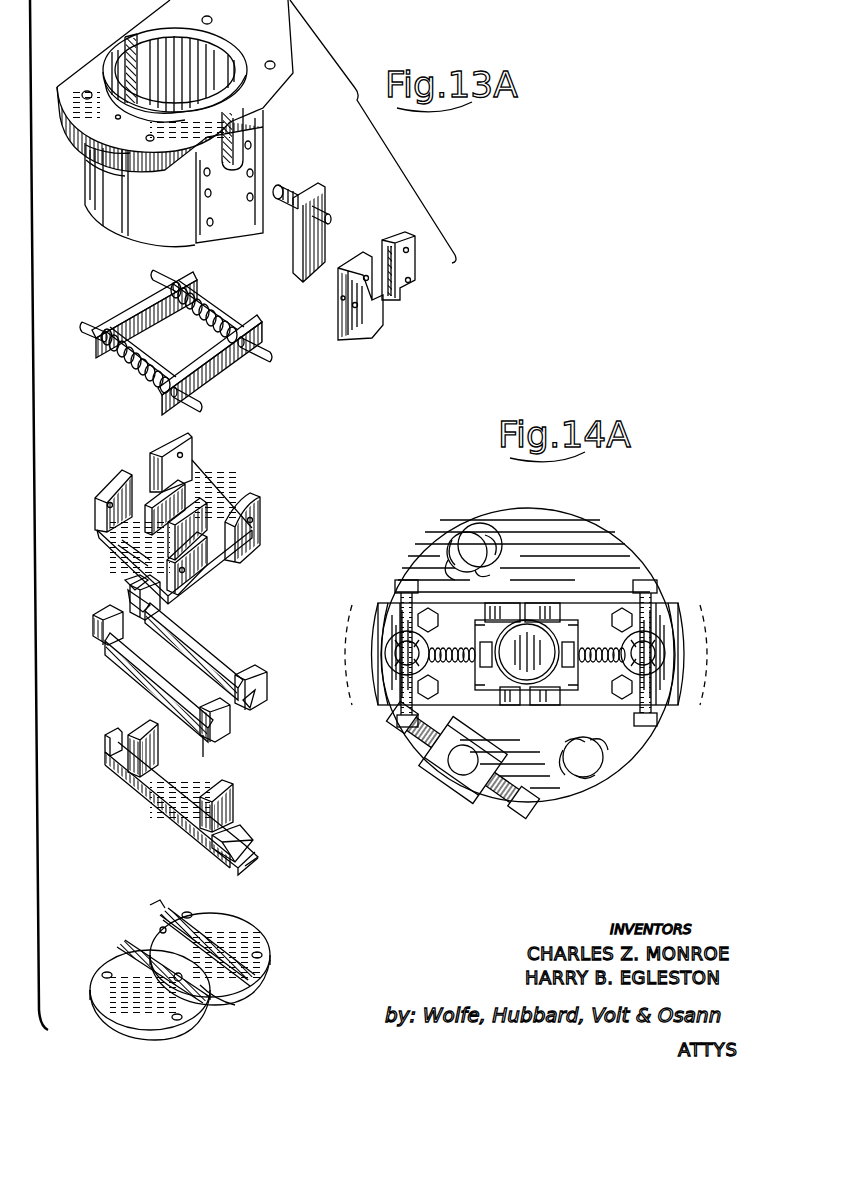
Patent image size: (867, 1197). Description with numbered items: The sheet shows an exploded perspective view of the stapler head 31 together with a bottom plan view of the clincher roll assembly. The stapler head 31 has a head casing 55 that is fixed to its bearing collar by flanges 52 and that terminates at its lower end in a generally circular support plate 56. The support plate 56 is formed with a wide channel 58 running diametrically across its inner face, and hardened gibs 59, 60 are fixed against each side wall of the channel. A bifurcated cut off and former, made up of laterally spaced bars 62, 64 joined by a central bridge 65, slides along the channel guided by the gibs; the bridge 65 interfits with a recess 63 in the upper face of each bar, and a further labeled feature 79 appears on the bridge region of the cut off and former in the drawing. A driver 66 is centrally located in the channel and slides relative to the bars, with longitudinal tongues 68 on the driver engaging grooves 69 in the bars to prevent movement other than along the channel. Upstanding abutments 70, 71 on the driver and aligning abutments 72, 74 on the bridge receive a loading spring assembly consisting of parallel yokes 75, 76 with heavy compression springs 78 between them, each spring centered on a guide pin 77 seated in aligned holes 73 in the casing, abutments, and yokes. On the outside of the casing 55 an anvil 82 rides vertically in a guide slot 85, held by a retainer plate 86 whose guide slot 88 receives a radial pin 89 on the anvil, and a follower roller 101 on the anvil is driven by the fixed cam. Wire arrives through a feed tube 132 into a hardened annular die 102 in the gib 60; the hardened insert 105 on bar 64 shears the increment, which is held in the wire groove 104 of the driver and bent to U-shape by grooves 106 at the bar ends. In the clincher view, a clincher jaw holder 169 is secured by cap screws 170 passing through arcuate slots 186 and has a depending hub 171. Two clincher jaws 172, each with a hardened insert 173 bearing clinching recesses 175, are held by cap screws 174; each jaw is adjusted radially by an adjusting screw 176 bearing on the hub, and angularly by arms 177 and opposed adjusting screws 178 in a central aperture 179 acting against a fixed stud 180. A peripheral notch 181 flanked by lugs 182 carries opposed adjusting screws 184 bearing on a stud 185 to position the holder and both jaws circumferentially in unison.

In FIG. 13A, the stapler head 31 is at (83, 231).
In FIG. 13A, the flanges 52 is at (111, 155).
In FIG. 13A, the head casing 55 is at (122, 221).
In FIG. 13A, the support plate 56 is at (122, 1002).
In FIG. 13A, the channel 58 is at (145, 945).
In FIG. 13A, the gib 59 is at (205, 986).
In FIG. 13A, the gib 60 is at (195, 935).
In FIG. 13A, the bar 62 is at (148, 665).
In FIG. 13A, the recess 63 is at (152, 606).
In FIG. 13A, the bar 64 is at (212, 655).
In FIG. 13A, the bridge 65 is at (122, 535).
In FIG. 13A, the driver 66 is at (168, 790).
In FIG. 13A, the tongues 68 is at (115, 762).
In FIG. 13A, the grooves 69 is at (128, 598).
In FIG. 13A, the upstanding abutment 70 is at (233, 806).
In FIG. 13A, the upstanding abutment 71 is at (150, 746).
In FIG. 13A, the aligning abutment 72 is at (255, 490).
In FIG. 13A, the holes 73 is at (192, 213).
In FIG. 13A, the aligning abutment 74 is at (118, 478).
In FIG. 13A, the yoke 75 is at (222, 370).
In FIG. 13A, the yoke 76 is at (152, 318).
In FIG. 13A, the guide pin 77 is at (225, 305).
In FIG. 13A, the compression spring 78 is at (205, 300).
In FIG. 13A, the slot 79 is at (160, 537).
In FIG. 13A, the anvil 82 is at (318, 240).
In FIG. 13A, the guide slot 85 is at (131, 50).
In FIG. 13A, the retainer plate 86 is at (386, 308).
In FIG. 13A, the guide slot 88 is at (384, 273).
In FIG. 13A, the pin 89 is at (331, 213).
In FIG. 13A, the follower roller 101 is at (310, 185).
In FIG. 13A, the annular die 102 is at (153, 912).
In FIG. 13A, the wire groove 104 is at (245, 856).
In FIG. 13A, the hardened insert 105 is at (130, 583).
In FIG. 13A, the grooves 106 is at (98, 623).
In FIG. 13A, the feed tube 132 is at (116, 119).
In FIG. 14A, the clincher jaw holder 169 is at (588, 528).
In FIG. 14A, the cap screws 170 is at (468, 534).
In FIG. 14A, the depending hub 171 is at (540, 622).
In FIG. 14A, the clincher jaw 172 is at (470, 705).
In FIG. 14A, the hardened insert 173 is at (376, 705).
In FIG. 14A, the cap screws 174 is at (438, 628).
In FIG. 14A, the clinching recesses 175 is at (350, 676).
In FIG. 14A, the radial adjusting screw 176 is at (488, 620).
In FIG. 14A, the arms 177 is at (530, 603).
In FIG. 14A, the adjusting screws 178 is at (405, 580).
In FIG. 14A, the central aperture 179 is at (390, 625).
In FIG. 14A, the fixed stud 180 is at (400, 660).
In FIG. 14A, the peripheral notch 181 is at (497, 745).
In FIG. 14A, the lugs 182 is at (445, 756).
In FIG. 14A, the adjusting screws 184 is at (415, 735).
In FIG. 14A, the stud 185 is at (463, 771).
In FIG. 14A, the arcuate slots 186 is at (491, 549).